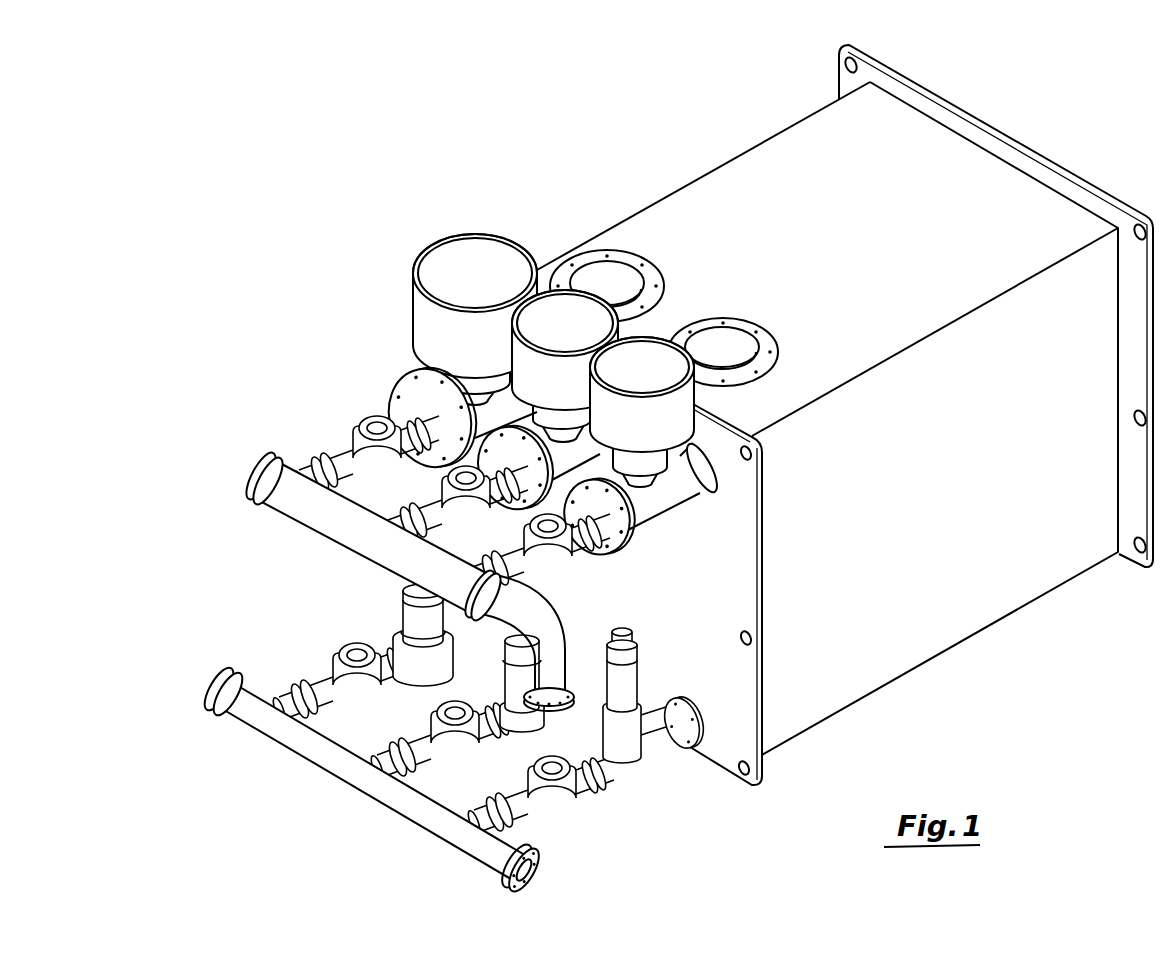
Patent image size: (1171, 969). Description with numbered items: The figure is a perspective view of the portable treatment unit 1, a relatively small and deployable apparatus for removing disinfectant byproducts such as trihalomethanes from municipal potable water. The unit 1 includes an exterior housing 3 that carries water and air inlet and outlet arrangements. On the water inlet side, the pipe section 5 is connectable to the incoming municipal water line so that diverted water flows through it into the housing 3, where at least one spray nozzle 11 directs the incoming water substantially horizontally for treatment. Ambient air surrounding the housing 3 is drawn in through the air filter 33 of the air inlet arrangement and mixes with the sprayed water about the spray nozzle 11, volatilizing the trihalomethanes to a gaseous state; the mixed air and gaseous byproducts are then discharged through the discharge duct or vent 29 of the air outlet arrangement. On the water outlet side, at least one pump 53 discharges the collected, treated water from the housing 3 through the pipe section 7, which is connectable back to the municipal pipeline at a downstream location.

The portable treatment unit 1 is at (422, 184).
The exterior housing 3 is at (923, 218).
The pipe section 5 is at (338, 530).
The pipe section 7 is at (322, 760).
The spray nozzle 11 is at (483, 392).
The discharge duct or vent 29 is at (647, 265).
The air filter 33 is at (461, 286).
The pump 53 is at (410, 617).